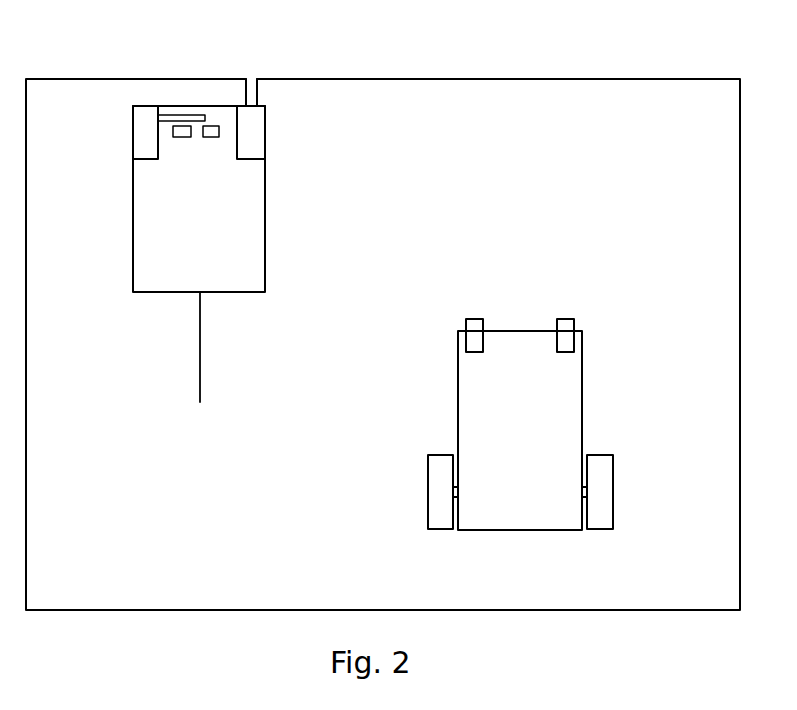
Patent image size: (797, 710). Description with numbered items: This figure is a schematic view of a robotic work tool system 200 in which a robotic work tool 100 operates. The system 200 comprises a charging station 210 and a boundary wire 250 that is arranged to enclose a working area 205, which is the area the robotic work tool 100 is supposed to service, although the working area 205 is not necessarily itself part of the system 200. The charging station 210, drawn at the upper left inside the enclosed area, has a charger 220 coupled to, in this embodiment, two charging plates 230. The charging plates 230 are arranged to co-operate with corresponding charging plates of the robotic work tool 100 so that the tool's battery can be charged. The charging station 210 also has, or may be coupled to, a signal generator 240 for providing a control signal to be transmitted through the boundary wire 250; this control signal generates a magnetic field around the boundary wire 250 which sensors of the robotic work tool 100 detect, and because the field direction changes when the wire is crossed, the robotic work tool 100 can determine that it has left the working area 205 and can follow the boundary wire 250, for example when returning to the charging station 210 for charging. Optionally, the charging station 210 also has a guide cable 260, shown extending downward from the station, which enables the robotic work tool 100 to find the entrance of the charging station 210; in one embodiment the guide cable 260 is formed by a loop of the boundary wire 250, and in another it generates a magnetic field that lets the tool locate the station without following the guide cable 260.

The robotic work tool 100 is at (582, 447).
The robotic work tool system 200 is at (120, 92).
The working area 205 is at (546, 98).
The charging station 210 is at (132, 162).
The charger 220 is at (143, 116).
The charging plates 230 is at (182, 126).
The signal generator 240 is at (265, 143).
The boundary wire 250 is at (683, 79).
The guide cable 260 is at (203, 380).